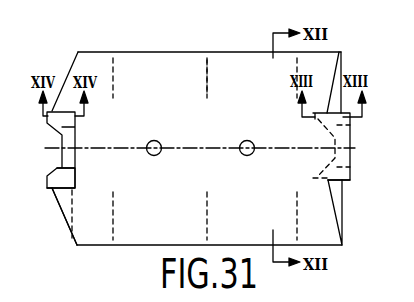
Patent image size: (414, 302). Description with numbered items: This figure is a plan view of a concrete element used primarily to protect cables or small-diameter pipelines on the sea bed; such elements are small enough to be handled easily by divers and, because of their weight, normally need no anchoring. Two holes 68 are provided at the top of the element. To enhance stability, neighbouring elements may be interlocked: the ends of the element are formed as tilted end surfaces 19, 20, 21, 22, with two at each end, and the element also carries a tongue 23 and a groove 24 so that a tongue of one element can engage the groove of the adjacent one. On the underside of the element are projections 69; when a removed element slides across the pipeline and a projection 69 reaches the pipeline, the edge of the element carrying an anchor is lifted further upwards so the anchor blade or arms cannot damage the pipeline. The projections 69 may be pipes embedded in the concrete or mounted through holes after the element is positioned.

The tilted end surface 19 is at (338, 210).
The tilted end surface 20 is at (338, 186).
The tilted end surface 21 is at (62, 203).
The tilted end surface 22 is at (60, 170).
The tongue 23 is at (346, 174).
The groove 24 is at (70, 175).
The hole 68 is at (251, 141).
The projection 69 is at (207, 92).